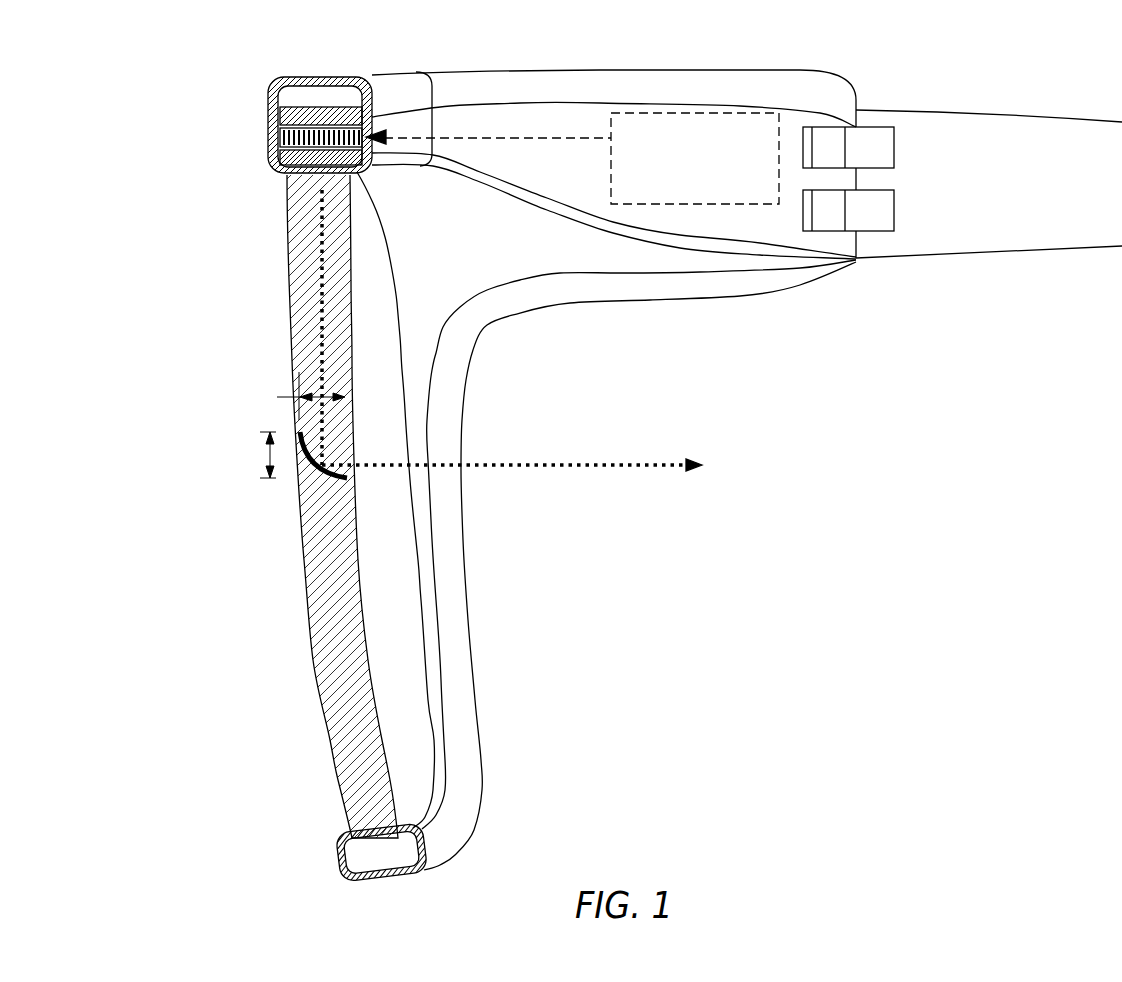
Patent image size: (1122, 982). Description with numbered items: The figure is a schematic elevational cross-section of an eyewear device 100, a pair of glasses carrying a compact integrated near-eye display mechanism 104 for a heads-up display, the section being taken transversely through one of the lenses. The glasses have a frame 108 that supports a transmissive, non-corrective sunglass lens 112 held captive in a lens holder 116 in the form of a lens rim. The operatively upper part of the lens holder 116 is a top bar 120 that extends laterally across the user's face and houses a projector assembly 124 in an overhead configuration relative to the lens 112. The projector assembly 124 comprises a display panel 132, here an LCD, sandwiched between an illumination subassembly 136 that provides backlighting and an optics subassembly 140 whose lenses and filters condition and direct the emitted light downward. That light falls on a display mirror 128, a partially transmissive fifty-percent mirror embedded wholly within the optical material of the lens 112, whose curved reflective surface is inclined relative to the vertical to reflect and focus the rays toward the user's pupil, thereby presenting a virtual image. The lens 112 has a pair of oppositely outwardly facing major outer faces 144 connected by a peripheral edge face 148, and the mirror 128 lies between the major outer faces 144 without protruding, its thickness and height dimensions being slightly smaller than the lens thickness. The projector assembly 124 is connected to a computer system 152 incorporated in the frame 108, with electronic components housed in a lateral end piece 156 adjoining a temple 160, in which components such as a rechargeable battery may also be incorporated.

The eyewear device 100 is at (744, 453).
The near-eye display mechanism 104 is at (378, 464).
The frame 108 is at (483, 327).
The lens 112 is at (335, 695).
The lens holder 116 is at (458, 652).
The top bar 120 is at (297, 78).
The projector assembly 124 is at (386, 126).
The display mirror 128 is at (329, 475).
The display panel 132 is at (282, 142).
The illumination subassembly 136 is at (282, 112).
The optics subassembly 140 is at (282, 160).
The major outer faces 144 is at (298, 620).
The peripheral edge face 148 is at (380, 850).
The computer system 152 is at (572, 158).
The lateral end piece 156 is at (694, 86).
The temple 160 is at (935, 213).